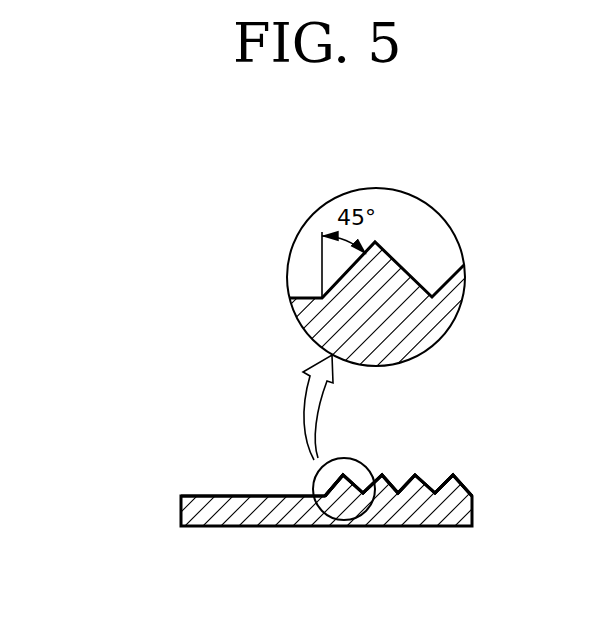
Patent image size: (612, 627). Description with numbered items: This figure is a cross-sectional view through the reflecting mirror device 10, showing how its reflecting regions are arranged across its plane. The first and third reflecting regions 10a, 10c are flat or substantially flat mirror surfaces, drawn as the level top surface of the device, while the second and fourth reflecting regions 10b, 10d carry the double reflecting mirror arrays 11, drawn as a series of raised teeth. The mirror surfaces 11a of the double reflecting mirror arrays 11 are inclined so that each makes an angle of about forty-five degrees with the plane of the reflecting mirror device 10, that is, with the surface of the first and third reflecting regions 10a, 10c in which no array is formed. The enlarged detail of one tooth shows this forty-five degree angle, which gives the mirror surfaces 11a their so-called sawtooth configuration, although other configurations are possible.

The reflecting mirror device 10 is at (145, 483).
The first reflecting region 10a is at (219, 491).
The third reflecting region 10c is at (222, 432).
The second reflecting region 10b is at (375, 474).
The fourth reflecting region 10d is at (398, 440).
The double reflecting mirror array 11 is at (440, 478).
The mirror surface 11a is at (416, 476).